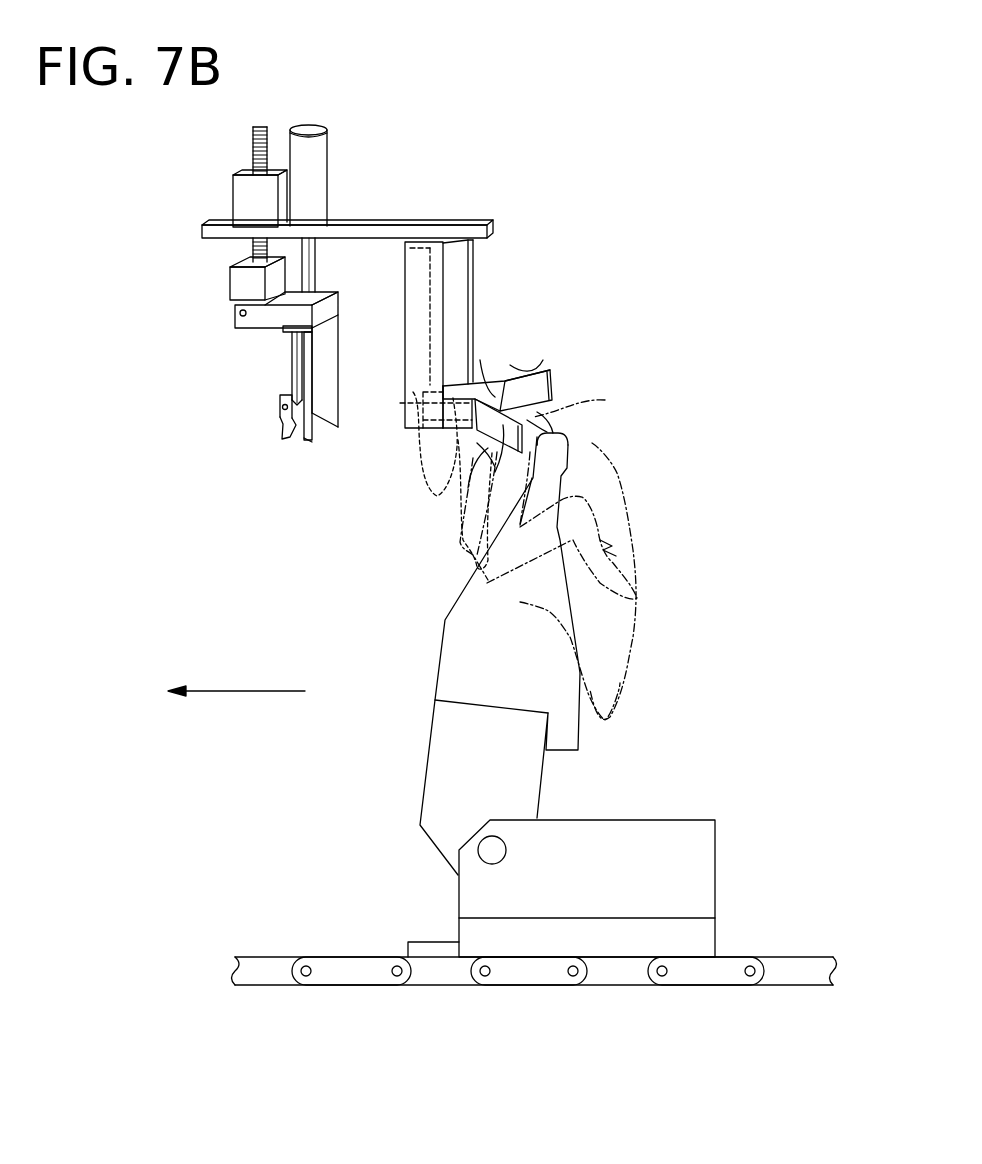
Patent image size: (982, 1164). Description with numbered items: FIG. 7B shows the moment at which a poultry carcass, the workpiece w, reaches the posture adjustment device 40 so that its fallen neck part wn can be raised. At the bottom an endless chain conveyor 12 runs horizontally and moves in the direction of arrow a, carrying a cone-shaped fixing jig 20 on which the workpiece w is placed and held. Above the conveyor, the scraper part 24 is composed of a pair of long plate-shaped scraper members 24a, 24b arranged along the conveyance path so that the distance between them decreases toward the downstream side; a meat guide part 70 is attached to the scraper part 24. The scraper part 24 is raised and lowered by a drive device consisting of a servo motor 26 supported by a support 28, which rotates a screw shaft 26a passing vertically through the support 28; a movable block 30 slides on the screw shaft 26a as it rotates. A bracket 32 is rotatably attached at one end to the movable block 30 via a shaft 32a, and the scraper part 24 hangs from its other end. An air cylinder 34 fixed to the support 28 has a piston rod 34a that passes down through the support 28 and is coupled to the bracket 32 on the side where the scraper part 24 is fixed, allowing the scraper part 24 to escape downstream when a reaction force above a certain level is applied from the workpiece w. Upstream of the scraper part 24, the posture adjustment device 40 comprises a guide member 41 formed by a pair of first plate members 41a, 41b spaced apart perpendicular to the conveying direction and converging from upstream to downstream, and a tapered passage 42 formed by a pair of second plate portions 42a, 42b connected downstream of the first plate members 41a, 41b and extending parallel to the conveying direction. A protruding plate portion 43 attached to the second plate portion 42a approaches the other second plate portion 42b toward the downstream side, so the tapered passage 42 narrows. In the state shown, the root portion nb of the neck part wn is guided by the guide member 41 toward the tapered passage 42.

The chain conveyor 12 is at (807, 955).
The fixing jig 20 is at (457, 655).
The scraper part 24 is at (280, 407).
The scraper member 24a is at (328, 383).
The scraper member 24b is at (303, 441).
The servo motor 26 is at (248, 199).
The screw shaft 26a is at (250, 247).
The support 28 is at (433, 224).
The movable block 30 is at (247, 283).
The bracket 32 is at (273, 314).
The shaft 32a is at (237, 314).
The air cylinder 34 is at (308, 172).
The piston rod 34a is at (307, 263).
The posture adjustment device 40 is at (578, 288).
The guide member 41 is at (604, 398).
The first plate member 41a is at (557, 387).
The first plate member 41b is at (568, 441).
The tapered passage 42 is at (457, 354).
The second plate portion 42a is at (488, 388).
The second plate portion 42b is at (462, 433).
The protruding plate portion 43 is at (420, 400).
The meat guide part 70 is at (274, 435).
The root portion nb is at (587, 399).
The workpiece w is at (617, 467).
The neck part wn is at (412, 498).
The arrow a is at (240, 691).